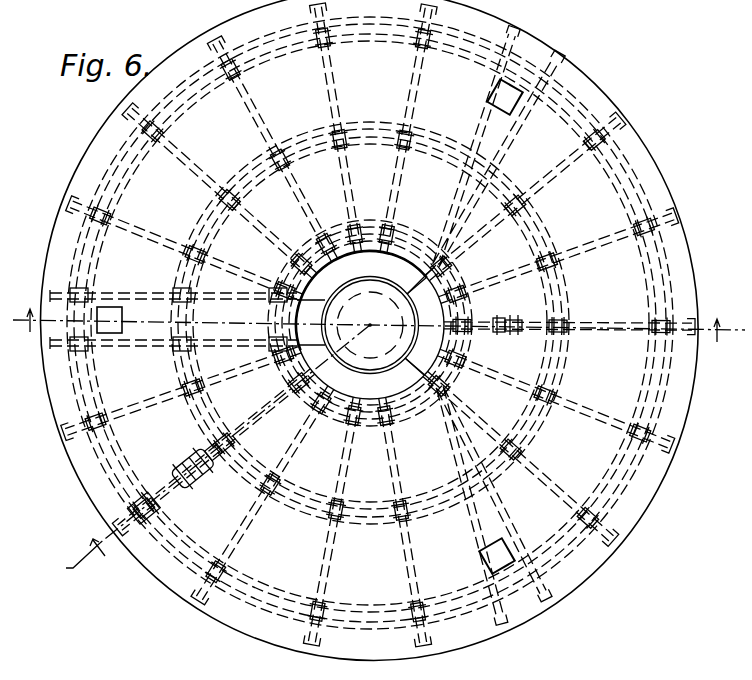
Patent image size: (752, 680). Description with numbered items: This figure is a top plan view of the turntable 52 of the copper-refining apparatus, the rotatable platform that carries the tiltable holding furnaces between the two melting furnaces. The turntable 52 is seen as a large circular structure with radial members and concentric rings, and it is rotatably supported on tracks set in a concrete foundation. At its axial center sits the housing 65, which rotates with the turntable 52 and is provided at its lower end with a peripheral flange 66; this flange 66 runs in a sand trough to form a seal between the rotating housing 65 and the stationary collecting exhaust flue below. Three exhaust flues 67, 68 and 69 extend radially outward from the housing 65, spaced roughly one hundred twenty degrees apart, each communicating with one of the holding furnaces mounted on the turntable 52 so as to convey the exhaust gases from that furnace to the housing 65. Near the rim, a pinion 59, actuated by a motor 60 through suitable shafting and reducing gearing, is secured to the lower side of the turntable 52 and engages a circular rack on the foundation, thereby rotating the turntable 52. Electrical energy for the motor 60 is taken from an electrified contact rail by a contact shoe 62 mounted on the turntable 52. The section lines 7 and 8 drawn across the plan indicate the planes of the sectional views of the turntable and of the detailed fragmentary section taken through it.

The turntable 52 is at (658, 171).
The pinion 59 is at (126, 548).
The motor 60 is at (199, 487).
The contact shoe 62 is at (506, 336).
The housing 65 is at (354, 289).
The peripheral flange 66 is at (417, 333).
The exhaust flue 67 is at (478, 491).
The exhaust flue 68 is at (486, 160).
The exhaust flue 69 is at (187, 319).
The section line 7— 7 is at (377, 327).
The section line 8— 8 is at (215, 455).